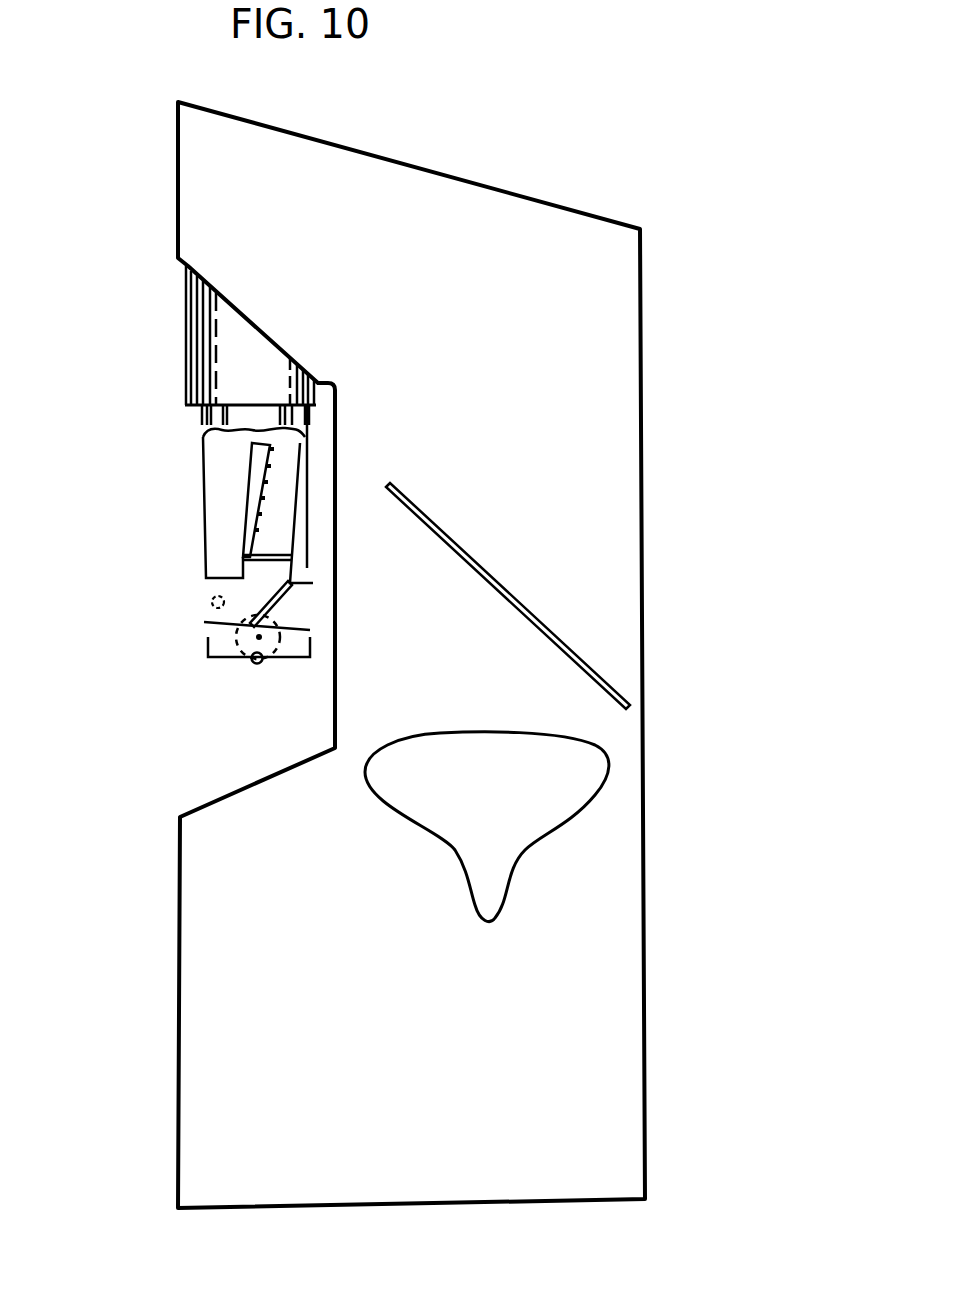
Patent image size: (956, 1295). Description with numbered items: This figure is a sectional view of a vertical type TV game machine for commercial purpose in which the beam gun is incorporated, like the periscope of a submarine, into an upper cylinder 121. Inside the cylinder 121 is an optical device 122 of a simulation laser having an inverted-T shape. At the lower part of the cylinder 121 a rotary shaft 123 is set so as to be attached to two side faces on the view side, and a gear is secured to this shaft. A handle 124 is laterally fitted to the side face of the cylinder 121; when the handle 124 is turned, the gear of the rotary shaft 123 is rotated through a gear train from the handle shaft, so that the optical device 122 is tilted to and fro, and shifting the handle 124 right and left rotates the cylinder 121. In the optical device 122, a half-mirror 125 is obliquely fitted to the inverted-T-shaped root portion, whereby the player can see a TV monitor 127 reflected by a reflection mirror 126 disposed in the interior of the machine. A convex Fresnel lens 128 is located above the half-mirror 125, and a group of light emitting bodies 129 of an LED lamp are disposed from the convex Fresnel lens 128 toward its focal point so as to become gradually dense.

The upper cylinder 121 is at (204, 414).
The optical device 122 is at (196, 576).
The rotary shaft 123 is at (211, 601).
The handle 124 is at (252, 664).
The half-mirror 125 is at (285, 598).
The reflection mirror 126 is at (565, 643).
The TV monitor 127 is at (513, 827).
The convex Fresnel lens 128 is at (267, 553).
The group of light emitting bodies 129 is at (267, 457).